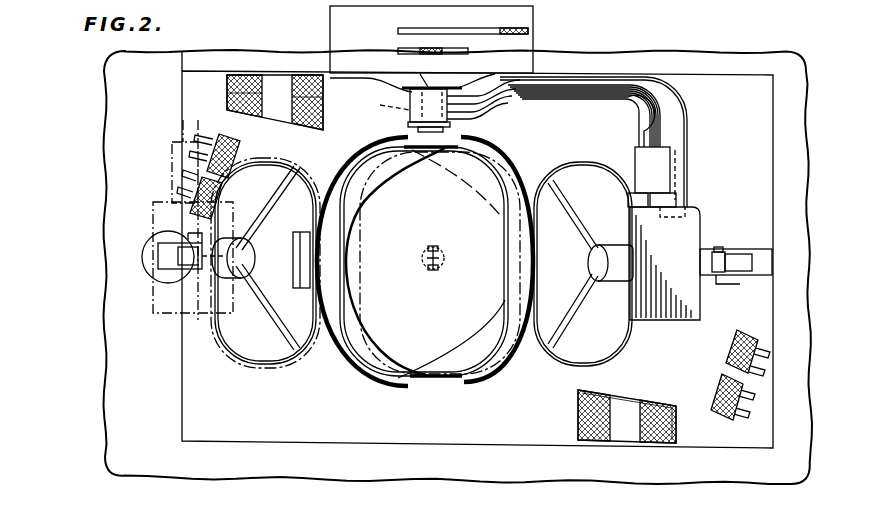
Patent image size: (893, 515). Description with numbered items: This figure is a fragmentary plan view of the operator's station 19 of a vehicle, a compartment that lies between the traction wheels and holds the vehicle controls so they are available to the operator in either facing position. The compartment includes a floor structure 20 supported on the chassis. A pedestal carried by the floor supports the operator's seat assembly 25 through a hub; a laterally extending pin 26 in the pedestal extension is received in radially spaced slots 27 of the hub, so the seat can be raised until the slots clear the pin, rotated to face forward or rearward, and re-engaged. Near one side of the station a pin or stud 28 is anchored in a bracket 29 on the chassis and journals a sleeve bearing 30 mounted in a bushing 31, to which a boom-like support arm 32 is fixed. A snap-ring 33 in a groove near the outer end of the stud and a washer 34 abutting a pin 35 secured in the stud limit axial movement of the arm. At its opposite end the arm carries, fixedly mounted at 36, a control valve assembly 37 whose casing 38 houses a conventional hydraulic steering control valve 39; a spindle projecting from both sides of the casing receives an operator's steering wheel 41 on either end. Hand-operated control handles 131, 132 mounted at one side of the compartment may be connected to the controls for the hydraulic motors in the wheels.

The operator's station 19 is at (254, 407).
The floor structure 20 is at (285, 422).
The operator's seat assembly 25 is at (378, 364).
The laterally extending pin 26 is at (438, 246).
The radially spaced slots 27 is at (441, 251).
The pin or stud 28 is at (444, 132).
The bracket 29 is at (482, 84).
The sleeve bearing 30 is at (412, 103).
The bushing 31 is at (408, 106).
The support arm 32 is at (594, 92).
The snap-ring 33 is at (418, 130).
The washer 34 is at (494, 97).
The pin 35 is at (432, 86).
The mounting location 36 is at (690, 206).
The control valve assembly 37 is at (708, 218).
The casing 38 is at (682, 318).
The hydraulic steering control valve 39 is at (634, 153).
The operator's steering wheel 41 is at (585, 162).
The control handle 131 is at (438, 47).
The control handle 132 is at (530, 31).